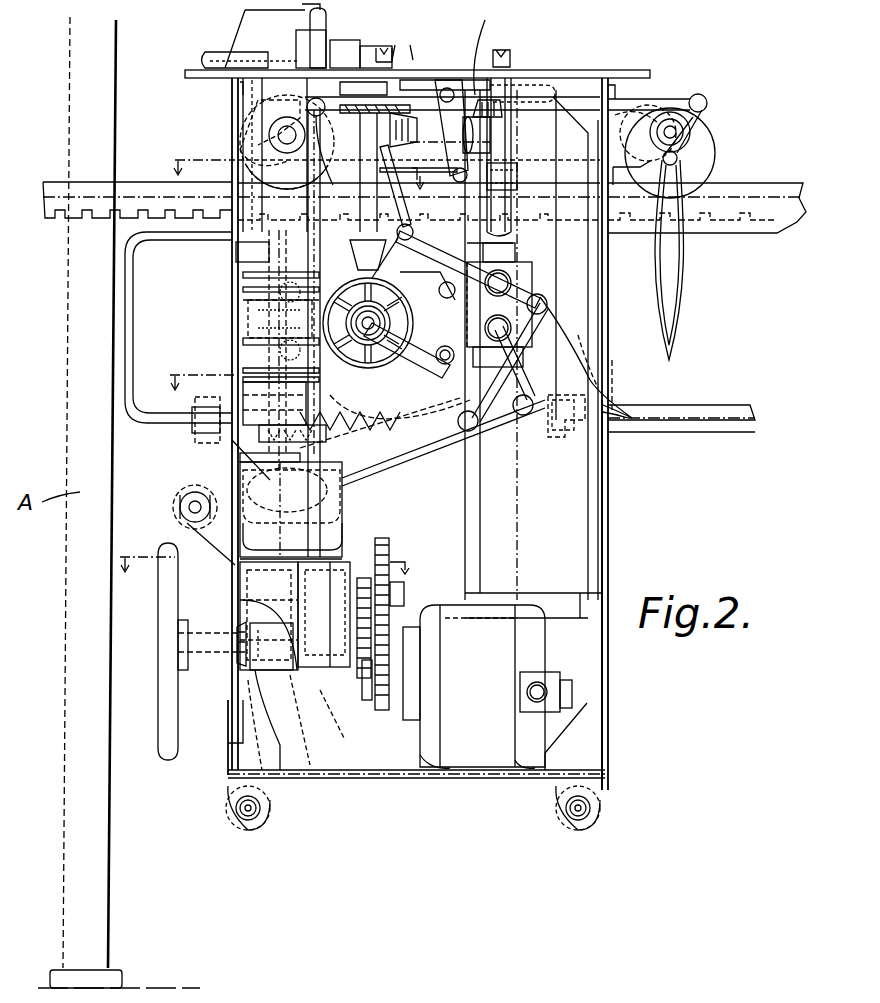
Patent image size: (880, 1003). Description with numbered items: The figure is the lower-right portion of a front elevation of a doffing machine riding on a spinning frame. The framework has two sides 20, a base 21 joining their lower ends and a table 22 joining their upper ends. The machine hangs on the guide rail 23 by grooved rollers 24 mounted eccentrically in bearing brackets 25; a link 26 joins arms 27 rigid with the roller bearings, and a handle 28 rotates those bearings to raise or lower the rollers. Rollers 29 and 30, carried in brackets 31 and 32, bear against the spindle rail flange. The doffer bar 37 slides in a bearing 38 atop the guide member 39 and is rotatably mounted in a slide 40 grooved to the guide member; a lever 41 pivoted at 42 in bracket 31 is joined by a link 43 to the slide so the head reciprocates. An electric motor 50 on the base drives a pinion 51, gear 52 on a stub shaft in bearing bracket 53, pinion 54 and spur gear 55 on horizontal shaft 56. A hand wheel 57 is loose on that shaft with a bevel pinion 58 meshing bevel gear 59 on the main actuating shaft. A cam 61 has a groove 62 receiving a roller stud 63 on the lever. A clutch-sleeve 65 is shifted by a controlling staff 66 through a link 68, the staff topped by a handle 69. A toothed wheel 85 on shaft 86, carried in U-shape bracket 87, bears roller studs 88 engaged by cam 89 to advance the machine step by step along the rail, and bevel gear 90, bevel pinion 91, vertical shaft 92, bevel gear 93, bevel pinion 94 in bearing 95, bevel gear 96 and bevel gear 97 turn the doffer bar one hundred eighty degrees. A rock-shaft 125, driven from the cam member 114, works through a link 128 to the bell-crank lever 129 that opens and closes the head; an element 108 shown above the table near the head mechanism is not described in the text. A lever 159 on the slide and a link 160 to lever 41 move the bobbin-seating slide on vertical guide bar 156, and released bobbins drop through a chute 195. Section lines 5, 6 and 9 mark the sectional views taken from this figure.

The section line 5- 5 is at (280, 372).
The section line 6- 6 is at (265, 559).
The section line 9- 9 is at (290, 168).
The sides 20 is at (246, 292).
The base 21 is at (470, 830).
The table 22 is at (400, 80).
The guide rail 23 is at (78, 200).
The grooved rollers 24 is at (270, 118).
The bearing brackets 25 is at (255, 138).
The link 26 is at (640, 108).
The arms 27 is at (706, 106).
The handle 28 is at (686, 300).
The roller 29 is at (200, 425).
The roller 30 is at (558, 440).
The bracket 31 is at (232, 448).
The bracket 32 is at (530, 370).
The doffer bar 37 is at (500, 48).
The bearing 38 is at (520, 178).
The guide member 39 is at (500, 500).
The slide 40 is at (532, 272).
The lever 41 is at (438, 450).
The pivot 42 is at (193, 507).
The link 43 is at (520, 372).
The electric motor 50 is at (496, 686).
The pinion 51 is at (378, 710).
The gear 52 is at (390, 548).
The bearing bracket 53 is at (333, 580).
The pinion 54 is at (404, 590).
The spur gear 55 is at (362, 685).
The horizontal shaft 56 is at (272, 672).
The hand wheel 57 is at (165, 640).
The bevel pinion 58 is at (260, 725).
The bevel gear 59 is at (240, 615).
The cam 61 is at (344, 492).
The groove 62 is at (345, 525).
The roller stud 63 is at (345, 438).
The clutch-sleeve 65 is at (300, 740).
The controlling staff 66 is at (192, 207).
The link 68 is at (330, 728).
The handle 69 is at (326, 34).
The toothed wheel 85 is at (422, 348).
The horizontal shaft 86 is at (368, 328).
The U-shape bracket 87 is at (245, 265).
The roller studs 88 is at (468, 269).
The cam 89 is at (250, 312).
The bevel gear 90 is at (400, 286).
The bevel pinion 91 is at (379, 255).
The vertical shaft 92 is at (366, 196).
The bevel gear 93 is at (345, 140).
The bevel pinion 94 is at (422, 161).
The bearing 95 is at (440, 130).
The bevel gear 96 is at (492, 140).
The bevel gear 97 is at (491, 48).
The guide bar 108 is at (222, 58).
The cam member 114 is at (235, 234).
The vertical rock-shaft 125 is at (230, 108).
The link 128 is at (438, 185).
The bell-crank lever 129 is at (450, 92).
The vertical guide bar 156 is at (400, 78).
The lever 159 is at (500, 262).
The link 160 is at (540, 312).
The chute 195 is at (580, 333).